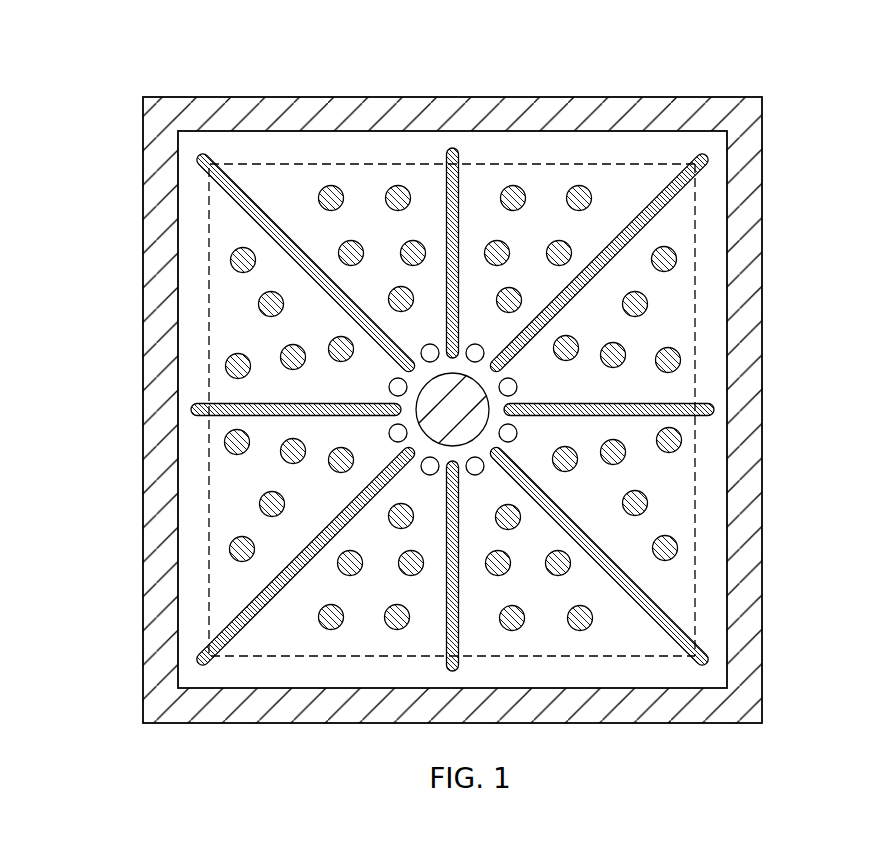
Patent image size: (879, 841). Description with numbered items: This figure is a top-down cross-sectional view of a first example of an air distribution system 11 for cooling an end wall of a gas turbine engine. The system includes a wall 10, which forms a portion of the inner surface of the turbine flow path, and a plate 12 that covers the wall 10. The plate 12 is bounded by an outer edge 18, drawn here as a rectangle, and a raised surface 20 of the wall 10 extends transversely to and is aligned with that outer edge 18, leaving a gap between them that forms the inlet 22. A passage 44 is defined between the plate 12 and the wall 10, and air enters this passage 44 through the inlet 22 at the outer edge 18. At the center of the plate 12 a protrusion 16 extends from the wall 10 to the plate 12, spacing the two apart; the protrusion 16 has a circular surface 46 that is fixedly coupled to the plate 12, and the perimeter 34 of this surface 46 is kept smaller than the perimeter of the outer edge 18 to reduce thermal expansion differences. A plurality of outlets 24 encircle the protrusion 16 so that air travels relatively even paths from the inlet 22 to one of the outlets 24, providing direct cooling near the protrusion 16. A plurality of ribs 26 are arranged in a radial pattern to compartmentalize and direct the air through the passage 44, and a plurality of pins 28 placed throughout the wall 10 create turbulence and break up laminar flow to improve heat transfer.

The wall 10 is at (143, 620).
The air distribution system 11 is at (95, 237).
The plate 12 is at (273, 627).
The protrusion 16 is at (483, 390).
The outer edge 18 is at (637, 660).
The raised surface 20 is at (218, 112).
The inlet 22 is at (612, 156).
The outlets 24 is at (475, 344).
The rib 26 is at (197, 155).
The pin 28 is at (396, 186).
The perimeter 34 is at (430, 438).
The passage 44 is at (227, 208).
The surface 46 is at (438, 415).